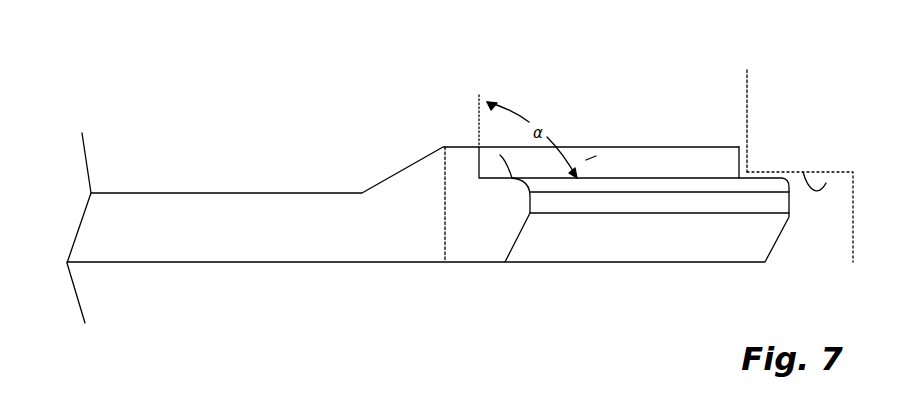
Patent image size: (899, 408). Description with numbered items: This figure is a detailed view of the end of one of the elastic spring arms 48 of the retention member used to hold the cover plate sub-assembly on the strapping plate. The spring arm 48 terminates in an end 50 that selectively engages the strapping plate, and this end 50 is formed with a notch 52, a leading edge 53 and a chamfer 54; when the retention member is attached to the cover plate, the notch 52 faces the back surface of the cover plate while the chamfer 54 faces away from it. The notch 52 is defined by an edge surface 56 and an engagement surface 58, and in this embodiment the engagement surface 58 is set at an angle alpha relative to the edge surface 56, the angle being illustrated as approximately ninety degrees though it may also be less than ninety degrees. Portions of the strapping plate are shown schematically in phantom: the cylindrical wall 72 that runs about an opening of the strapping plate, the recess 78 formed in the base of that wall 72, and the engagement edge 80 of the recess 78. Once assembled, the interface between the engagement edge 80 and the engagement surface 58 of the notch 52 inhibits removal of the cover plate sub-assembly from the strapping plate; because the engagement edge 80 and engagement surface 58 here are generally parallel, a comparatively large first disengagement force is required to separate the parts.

The spring arm 48 is at (237, 241).
The end 50 is at (465, 213).
The notch 52 is at (643, 160).
The leading edge 53 is at (653, 203).
The chamfer 54 is at (577, 247).
The edge surface 56 is at (593, 157).
The engagement surface 58 is at (500, 155).
The cylindrical wall 72 is at (743, 122).
The recess 78 is at (815, 215).
The engagement edge 80 is at (826, 183).